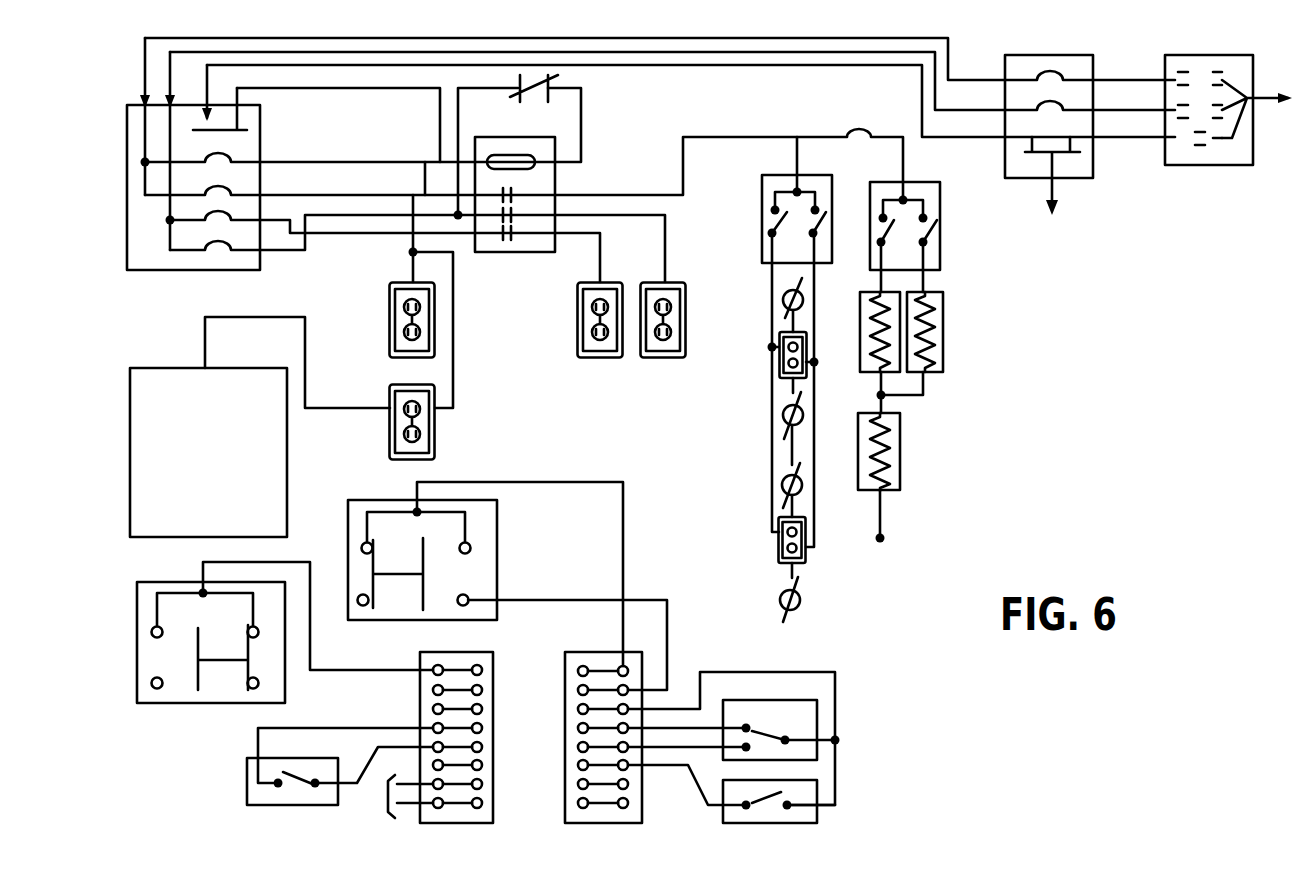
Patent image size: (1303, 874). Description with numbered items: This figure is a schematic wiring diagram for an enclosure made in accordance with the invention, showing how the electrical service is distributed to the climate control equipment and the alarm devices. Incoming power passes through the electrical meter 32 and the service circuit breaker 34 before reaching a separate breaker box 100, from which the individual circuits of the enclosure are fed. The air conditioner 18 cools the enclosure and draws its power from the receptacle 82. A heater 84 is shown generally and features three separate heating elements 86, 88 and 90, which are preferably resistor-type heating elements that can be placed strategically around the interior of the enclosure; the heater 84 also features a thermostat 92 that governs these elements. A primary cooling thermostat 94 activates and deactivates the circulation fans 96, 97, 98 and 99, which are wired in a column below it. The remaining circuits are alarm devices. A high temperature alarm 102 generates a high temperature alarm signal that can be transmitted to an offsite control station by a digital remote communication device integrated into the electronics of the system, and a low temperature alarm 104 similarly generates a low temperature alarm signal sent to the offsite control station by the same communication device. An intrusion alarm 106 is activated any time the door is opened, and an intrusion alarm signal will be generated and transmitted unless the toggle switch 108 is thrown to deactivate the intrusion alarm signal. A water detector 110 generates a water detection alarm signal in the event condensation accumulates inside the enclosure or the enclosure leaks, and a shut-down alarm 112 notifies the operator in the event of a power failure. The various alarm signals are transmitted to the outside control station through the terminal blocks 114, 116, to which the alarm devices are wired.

The air conditioner 18 is at (155, 368).
The electrical meter 32 is at (1205, 55).
The service circuit breaker 34 is at (1052, 55).
The receptacle 82 is at (403, 385).
The heater 84 is at (952, 282).
The heating element 86 is at (857, 340).
The heating element 88 is at (945, 355).
The heating element 90 is at (902, 465).
The thermostat 92 is at (942, 248).
The primary cooling thermostat 94 is at (762, 220).
The circulation fan 96 is at (782, 302).
The circulation fan 97 is at (783, 415).
The circulation fan 98 is at (781, 486).
The circulation fan 99 is at (780, 602).
The breaker box 100 is at (126, 142).
The high temperature alarm 102 is at (498, 533).
The low temperature alarm 104 is at (137, 655).
The intrusion alarm 106 is at (775, 698).
The toggle switch 108 is at (802, 824).
The water detector 110 is at (245, 790).
The shut-down alarm 112 is at (385, 797).
The terminal block 114 is at (497, 693).
The terminal block 116 is at (560, 715).